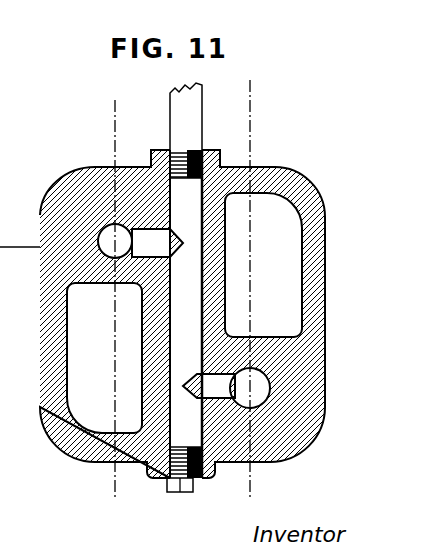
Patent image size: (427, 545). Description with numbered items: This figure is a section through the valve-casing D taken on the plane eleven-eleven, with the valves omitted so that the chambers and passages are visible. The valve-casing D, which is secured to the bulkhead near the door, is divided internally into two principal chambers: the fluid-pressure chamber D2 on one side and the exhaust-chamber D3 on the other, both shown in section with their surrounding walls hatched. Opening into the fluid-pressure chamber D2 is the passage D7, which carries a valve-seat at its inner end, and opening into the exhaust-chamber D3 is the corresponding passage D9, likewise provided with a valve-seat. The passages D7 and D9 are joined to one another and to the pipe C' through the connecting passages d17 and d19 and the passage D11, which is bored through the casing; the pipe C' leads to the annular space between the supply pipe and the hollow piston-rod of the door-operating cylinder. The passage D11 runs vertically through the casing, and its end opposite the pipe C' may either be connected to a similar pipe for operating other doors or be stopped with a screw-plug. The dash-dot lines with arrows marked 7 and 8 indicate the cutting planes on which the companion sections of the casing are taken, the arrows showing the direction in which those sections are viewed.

The valve-casing D is at (298, 182).
The fluid-pressure chamber D2 is at (176, 339).
The exhaust-chamber D3 is at (251, 262).
The passage D7 is at (112, 233).
The passage D9 is at (258, 391).
The passage D11 is at (114, 358).
The passage d17 is at (157, 244).
The passage d19 is at (209, 387).
The pipe C' is at (198, 304).
The section plane 7 7 is at (218, 89).
The section plane 8 8 is at (70, 111).